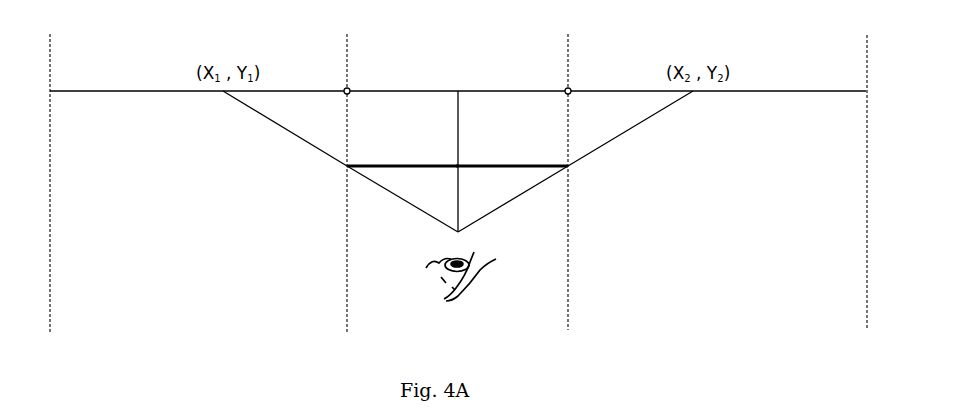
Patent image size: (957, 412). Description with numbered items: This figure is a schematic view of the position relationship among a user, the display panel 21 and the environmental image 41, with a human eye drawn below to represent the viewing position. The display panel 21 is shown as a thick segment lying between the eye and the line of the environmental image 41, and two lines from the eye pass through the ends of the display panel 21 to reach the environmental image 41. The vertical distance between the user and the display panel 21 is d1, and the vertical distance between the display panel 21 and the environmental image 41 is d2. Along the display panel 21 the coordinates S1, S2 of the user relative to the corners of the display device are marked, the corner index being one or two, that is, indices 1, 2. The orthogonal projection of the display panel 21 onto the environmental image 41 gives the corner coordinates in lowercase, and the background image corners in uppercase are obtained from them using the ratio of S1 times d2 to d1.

The environmental image 41 is at (747, 91).
The display panel 21 is at (458, 148).
The coordinate of the user relative to a corner of the display device S1 is at (402, 154).
The coordinate of the user relative to a corner of the display device S2 is at (512, 154).
The vertical distance between the user and the display panel d1 is at (470, 199).
The vertical distance between the display panel and the environmental image d2 is at (470, 128).
The first point 1 is at (380, 79).
The second point 2 is at (534, 79).